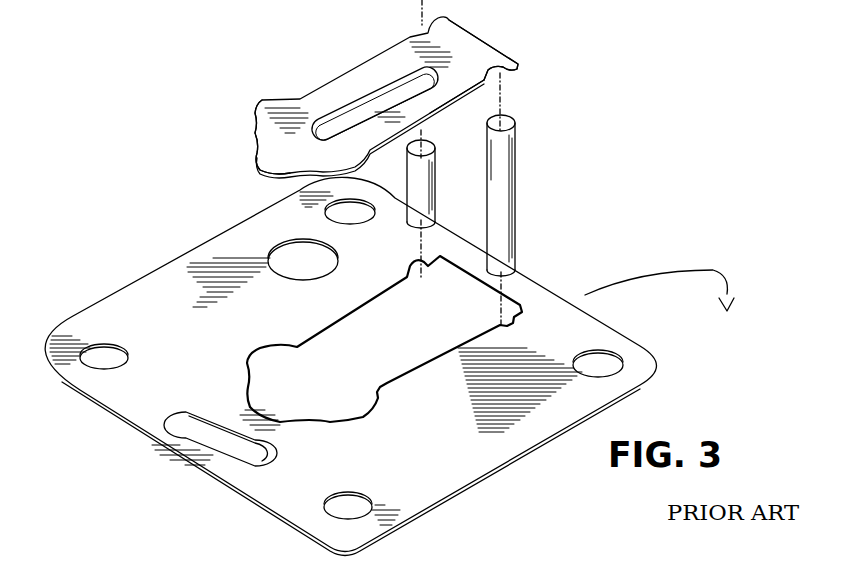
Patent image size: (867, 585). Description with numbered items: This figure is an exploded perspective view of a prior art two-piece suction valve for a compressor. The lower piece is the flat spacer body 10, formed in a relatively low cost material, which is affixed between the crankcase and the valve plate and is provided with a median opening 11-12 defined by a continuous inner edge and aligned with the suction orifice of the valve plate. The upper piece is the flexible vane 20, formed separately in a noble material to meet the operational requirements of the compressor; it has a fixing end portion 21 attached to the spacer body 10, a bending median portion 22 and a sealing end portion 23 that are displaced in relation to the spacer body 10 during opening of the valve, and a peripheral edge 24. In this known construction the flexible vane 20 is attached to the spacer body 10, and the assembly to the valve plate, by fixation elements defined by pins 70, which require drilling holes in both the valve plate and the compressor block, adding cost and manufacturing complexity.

The spacer body 10 is at (163, 323).
The median opening and continuous inner edge 11-12 is at (380, 298).
The flexible vane 20 is at (354, 63).
The fixing end portion 21 is at (467, 52).
The bending median portion 22 is at (352, 84).
The sealing end portion 23 is at (257, 118).
The peripheral edge 24 is at (460, 106).
The pins 70 is at (422, 198).